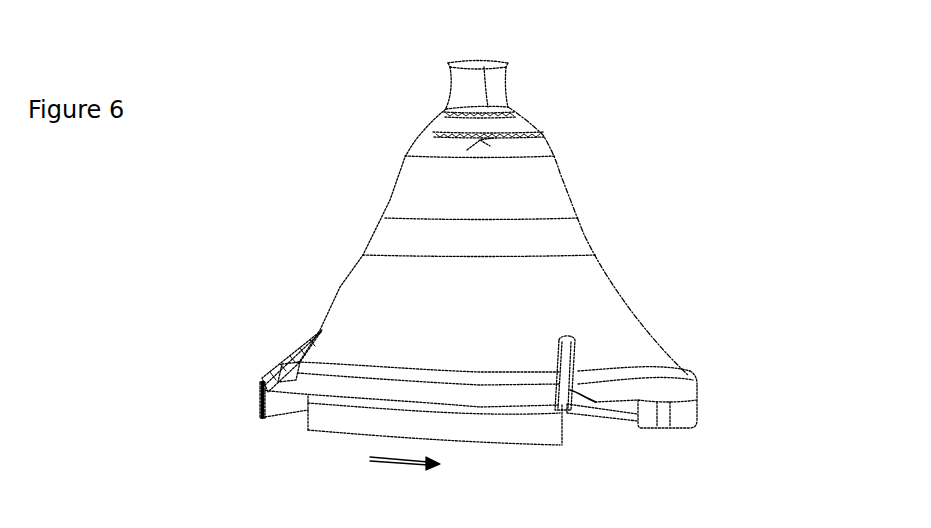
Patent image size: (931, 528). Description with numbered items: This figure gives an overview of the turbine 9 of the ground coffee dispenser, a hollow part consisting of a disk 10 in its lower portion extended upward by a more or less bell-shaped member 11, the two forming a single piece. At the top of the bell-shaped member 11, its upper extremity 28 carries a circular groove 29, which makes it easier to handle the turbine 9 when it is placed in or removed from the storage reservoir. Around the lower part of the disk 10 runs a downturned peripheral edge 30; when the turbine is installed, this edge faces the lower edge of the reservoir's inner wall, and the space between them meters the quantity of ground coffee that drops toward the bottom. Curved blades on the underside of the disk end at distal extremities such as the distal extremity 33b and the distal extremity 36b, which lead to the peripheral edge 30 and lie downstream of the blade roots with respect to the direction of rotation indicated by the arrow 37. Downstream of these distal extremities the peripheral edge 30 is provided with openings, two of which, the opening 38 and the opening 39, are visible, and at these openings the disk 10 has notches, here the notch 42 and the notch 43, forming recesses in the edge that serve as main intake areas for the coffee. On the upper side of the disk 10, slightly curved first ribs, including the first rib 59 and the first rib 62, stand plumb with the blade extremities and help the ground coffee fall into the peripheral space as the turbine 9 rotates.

The turbine 9 is at (686, 162).
The disk 10 is at (692, 377).
The bell-shaped member 11 is at (585, 231).
The upper extremity 28 is at (508, 63).
The circular groove 29 is at (505, 83).
The downturned peripheral edge 30 is at (685, 405).
The distal extremity of blade 33b is at (568, 436).
The distal extremity of blade 36b is at (271, 407).
The arrow 37 is at (388, 468).
The opening 38 is at (294, 416).
The opening 39 is at (599, 422).
The notch 42 is at (293, 390).
The notch 43 is at (607, 400).
The first rib 59 is at (565, 342).
The first rib 62 is at (305, 340).